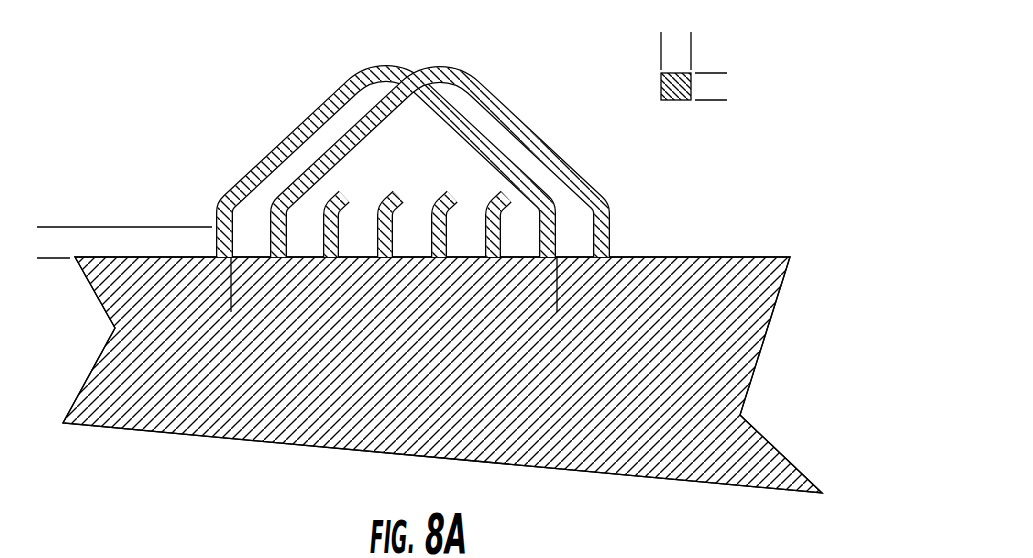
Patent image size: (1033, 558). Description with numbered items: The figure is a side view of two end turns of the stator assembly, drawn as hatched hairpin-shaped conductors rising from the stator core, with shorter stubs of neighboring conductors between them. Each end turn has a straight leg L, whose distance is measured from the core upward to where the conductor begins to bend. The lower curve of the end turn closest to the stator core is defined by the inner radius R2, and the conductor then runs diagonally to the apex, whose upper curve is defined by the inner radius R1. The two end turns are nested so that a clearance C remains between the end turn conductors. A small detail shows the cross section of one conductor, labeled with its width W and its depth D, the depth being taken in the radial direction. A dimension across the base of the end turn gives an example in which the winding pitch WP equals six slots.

The inner radius of the upper curve R1 is at (323, 77).
The inner radius of the lower curve R2 is at (274, 196).
The clearance C is at (397, 131).
The straight leg distance L is at (53, 192).
The width of end turn conductor W is at (640, 47).
The depth of end turn conductor D is at (713, 47).
The winding pitch WP is at (548, 295).